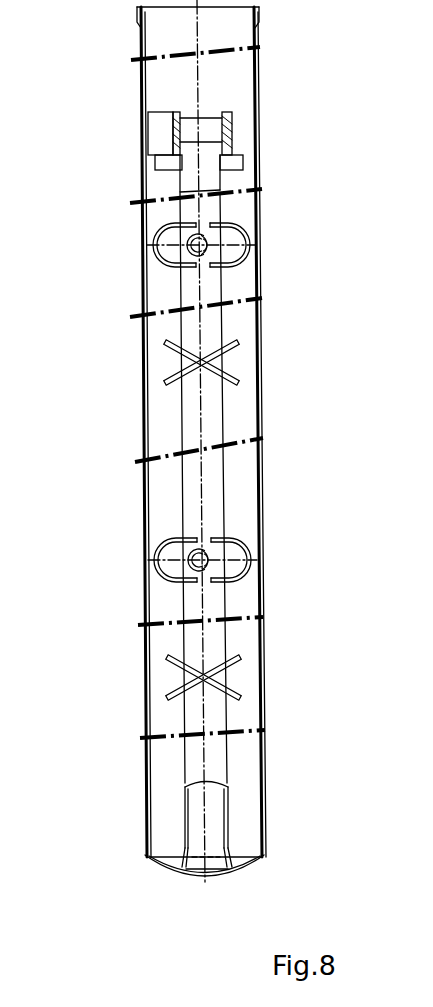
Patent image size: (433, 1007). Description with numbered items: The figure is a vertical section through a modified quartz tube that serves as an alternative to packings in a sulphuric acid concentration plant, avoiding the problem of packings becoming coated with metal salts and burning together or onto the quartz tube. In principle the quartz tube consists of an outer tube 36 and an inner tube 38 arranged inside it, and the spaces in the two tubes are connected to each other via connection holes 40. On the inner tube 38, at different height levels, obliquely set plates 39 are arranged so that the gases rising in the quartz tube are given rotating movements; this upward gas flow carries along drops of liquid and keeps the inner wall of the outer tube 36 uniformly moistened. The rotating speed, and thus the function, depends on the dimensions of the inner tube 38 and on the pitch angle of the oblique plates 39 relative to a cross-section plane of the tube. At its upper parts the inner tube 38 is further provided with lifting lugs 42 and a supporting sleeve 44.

The outer tube 36 is at (258, 400).
The inner tube 38 is at (226, 478).
The spacers 39 is at (237, 343).
The connection holes 40 is at (224, 858).
The lifting lugs 42 is at (237, 162).
The supporting sleeve 44 is at (160, 133).